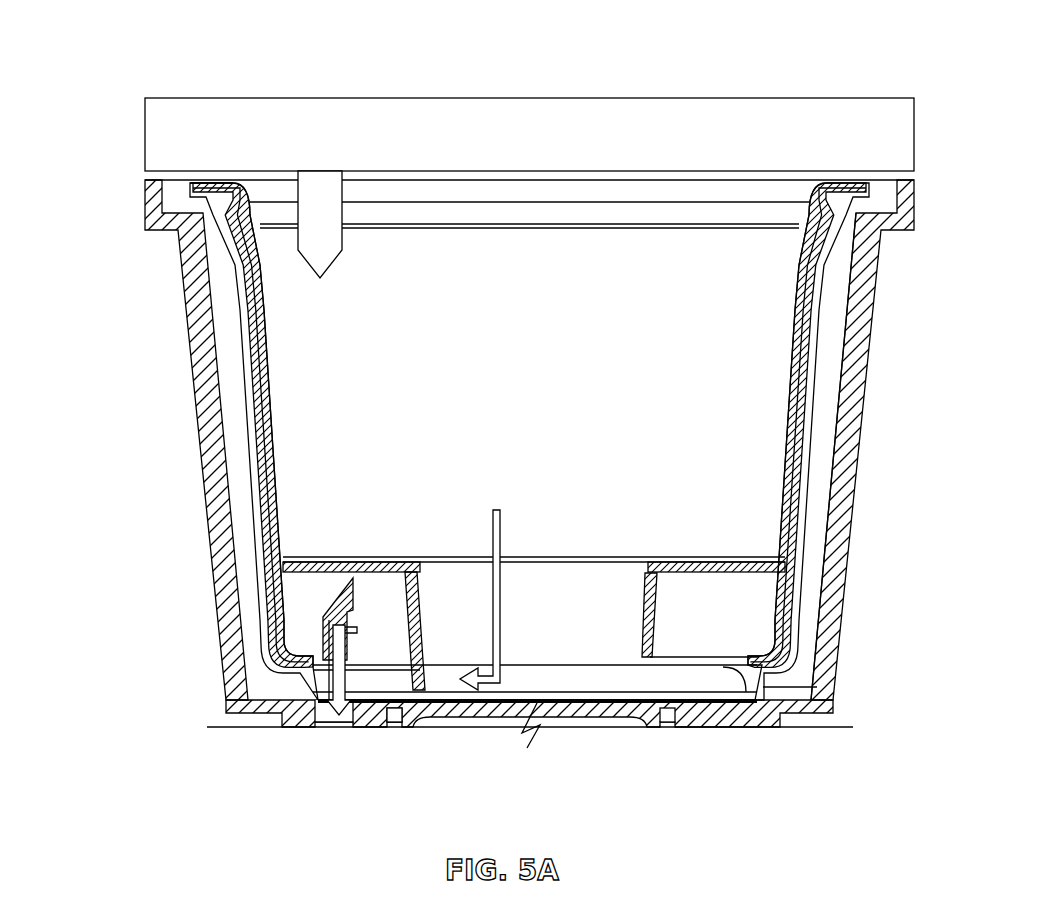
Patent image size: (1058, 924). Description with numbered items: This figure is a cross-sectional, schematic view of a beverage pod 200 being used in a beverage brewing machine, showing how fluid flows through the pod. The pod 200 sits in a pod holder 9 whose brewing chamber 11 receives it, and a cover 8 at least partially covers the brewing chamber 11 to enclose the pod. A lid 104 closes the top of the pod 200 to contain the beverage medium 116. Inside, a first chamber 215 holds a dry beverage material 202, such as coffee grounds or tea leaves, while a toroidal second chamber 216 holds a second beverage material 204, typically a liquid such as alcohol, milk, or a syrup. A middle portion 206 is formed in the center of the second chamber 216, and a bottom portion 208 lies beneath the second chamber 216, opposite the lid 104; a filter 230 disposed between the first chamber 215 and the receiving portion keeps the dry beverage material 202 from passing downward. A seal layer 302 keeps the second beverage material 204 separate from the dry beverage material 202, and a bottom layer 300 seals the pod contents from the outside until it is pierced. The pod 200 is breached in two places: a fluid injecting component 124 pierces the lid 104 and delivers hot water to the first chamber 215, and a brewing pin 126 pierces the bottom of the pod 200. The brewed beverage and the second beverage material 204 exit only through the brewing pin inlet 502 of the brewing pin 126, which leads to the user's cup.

The cover 8 is at (466, 98).
The pod holder 9 is at (878, 347).
The brewing chamber 11 is at (826, 412).
The lid 104 is at (600, 178).
The beverage medium 116 is at (287, 335).
The fluid injecting component 124 is at (345, 198).
The brewing pin 126 is at (350, 607).
The beverage pod 200 is at (196, 170).
The dry beverage material 202 is at (529, 441).
The second beverage material 204 is at (293, 623).
The middle portion 206 is at (535, 592).
The bottom portion 208 is at (705, 688).
The first chamber 215 is at (491, 375).
The second chamber 216 is at (372, 590).
The filter 230 is at (700, 555).
The bottom layer 300 is at (737, 700).
The seal layer 302 is at (817, 687).
The brewing pin inlet 502 is at (397, 722).